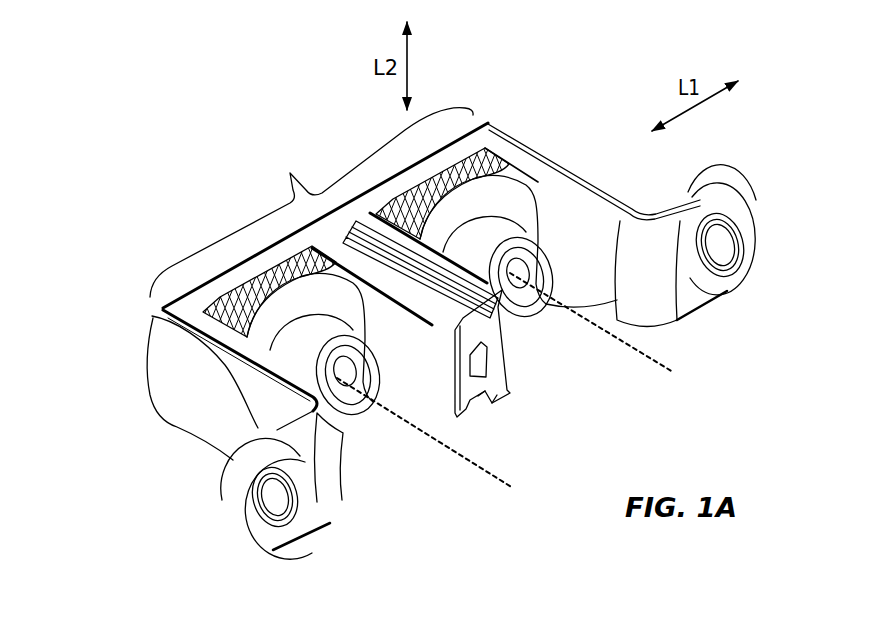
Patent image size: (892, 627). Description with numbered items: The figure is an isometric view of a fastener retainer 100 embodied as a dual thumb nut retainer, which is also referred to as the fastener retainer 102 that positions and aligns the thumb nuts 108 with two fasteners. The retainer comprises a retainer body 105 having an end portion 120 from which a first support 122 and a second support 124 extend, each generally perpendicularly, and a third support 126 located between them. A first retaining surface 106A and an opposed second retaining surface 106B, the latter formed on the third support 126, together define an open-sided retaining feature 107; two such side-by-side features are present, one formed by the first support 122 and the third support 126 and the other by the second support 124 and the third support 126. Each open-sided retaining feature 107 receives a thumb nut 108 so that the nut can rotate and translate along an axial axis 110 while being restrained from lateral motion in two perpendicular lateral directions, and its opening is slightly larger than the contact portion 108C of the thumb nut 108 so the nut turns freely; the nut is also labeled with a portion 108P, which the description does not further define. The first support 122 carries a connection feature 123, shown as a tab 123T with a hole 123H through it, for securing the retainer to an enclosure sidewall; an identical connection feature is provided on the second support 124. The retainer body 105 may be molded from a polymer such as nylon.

The fastener retainer 100 is at (278, 120).
The fastener retainer 102 is at (490, 123).
The retainer body 105 is at (155, 337).
The first retaining surface 106A is at (593, 244).
The second retaining surface 106B is at (498, 355).
The open-sided retaining feature 107 is at (597, 348).
The thumb nut 108 is at (520, 166).
The contact portion 108C is at (497, 170).
The cam pivot 108P is at (515, 223).
The axial axis 110 is at (663, 364).
The end portion 120 is at (311, 202).
The first support 122 is at (560, 156).
The connection feature 123 is at (753, 272).
The hole 123H is at (743, 226).
The tab 123T is at (693, 189).
The second support 124 is at (170, 428).
The third support 126 is at (507, 401).